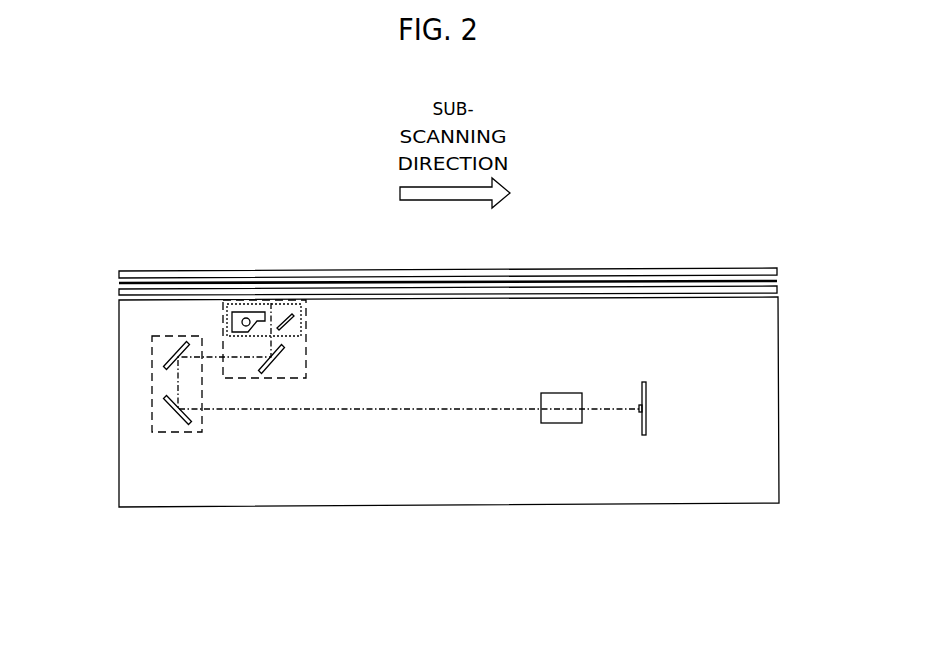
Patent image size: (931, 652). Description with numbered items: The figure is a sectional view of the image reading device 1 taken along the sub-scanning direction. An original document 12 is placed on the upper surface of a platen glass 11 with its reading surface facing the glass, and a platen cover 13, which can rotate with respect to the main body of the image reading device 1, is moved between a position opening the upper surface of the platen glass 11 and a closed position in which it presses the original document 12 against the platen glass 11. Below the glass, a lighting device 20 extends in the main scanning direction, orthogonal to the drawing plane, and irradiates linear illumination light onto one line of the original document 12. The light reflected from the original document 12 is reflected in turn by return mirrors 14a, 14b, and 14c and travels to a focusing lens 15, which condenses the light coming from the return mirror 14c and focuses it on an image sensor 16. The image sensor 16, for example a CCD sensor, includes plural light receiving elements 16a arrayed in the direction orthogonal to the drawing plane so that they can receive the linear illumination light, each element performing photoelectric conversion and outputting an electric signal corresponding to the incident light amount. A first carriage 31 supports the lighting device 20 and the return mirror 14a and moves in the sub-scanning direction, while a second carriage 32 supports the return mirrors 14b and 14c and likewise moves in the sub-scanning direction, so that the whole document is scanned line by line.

The image reading device 1 is at (420, 512).
The platen glass 11 is at (707, 288).
The original document 12 is at (778, 280).
The platen cover 13 is at (582, 272).
The return mirror 14a is at (280, 352).
The return mirror 14b is at (185, 347).
The return mirror 14c is at (170, 405).
The focusing lens 15 is at (562, 424).
The image sensor 16 is at (647, 412).
The light receiving elements 16a is at (640, 406).
The lighting device 20 is at (302, 315).
The first carriage 31 is at (222, 328).
The second carriage 32 is at (180, 432).